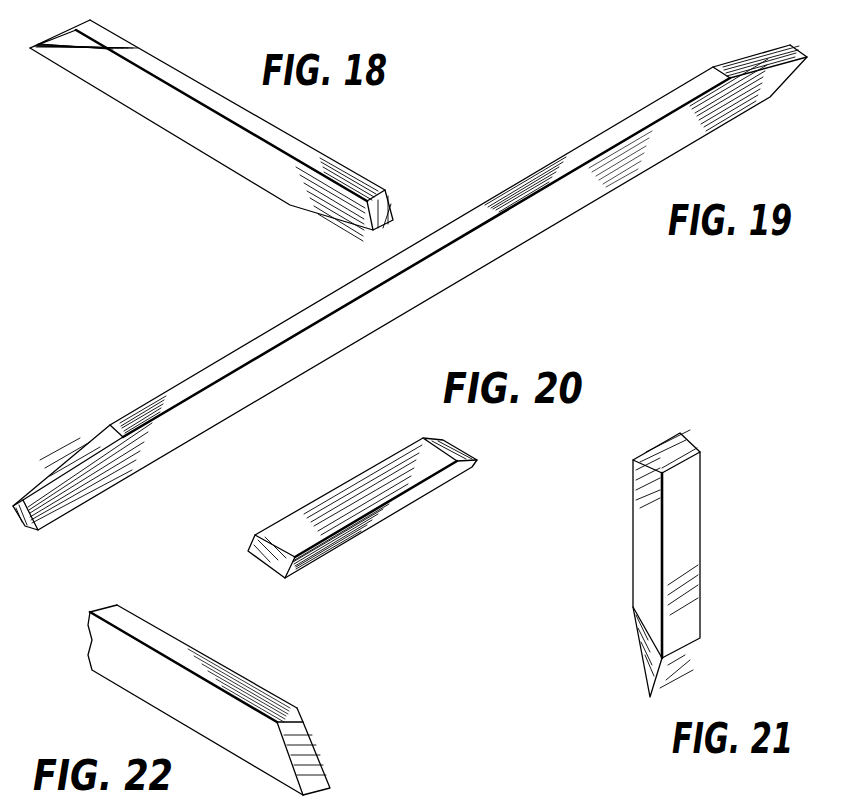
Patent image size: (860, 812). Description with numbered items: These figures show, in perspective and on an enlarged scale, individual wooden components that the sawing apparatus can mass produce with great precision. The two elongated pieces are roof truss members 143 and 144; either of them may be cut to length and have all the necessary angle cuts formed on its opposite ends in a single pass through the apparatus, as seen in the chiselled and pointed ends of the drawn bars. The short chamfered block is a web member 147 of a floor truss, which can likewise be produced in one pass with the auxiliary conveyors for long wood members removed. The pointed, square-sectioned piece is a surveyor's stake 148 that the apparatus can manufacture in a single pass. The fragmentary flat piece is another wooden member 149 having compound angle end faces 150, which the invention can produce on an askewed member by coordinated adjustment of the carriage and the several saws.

In FIG. 18, the roof truss member 143 is at (160, 115).
In FIG. 19, the roof truss member 144 is at (538, 212).
In FIG. 20, the web member 147 is at (382, 508).
In FIG. 21, the surveyor's stake 148 is at (692, 538).
In FIG. 22, the wooden member 149 is at (183, 688).
In FIG. 22, the compound angle end faces 150 is at (300, 733).